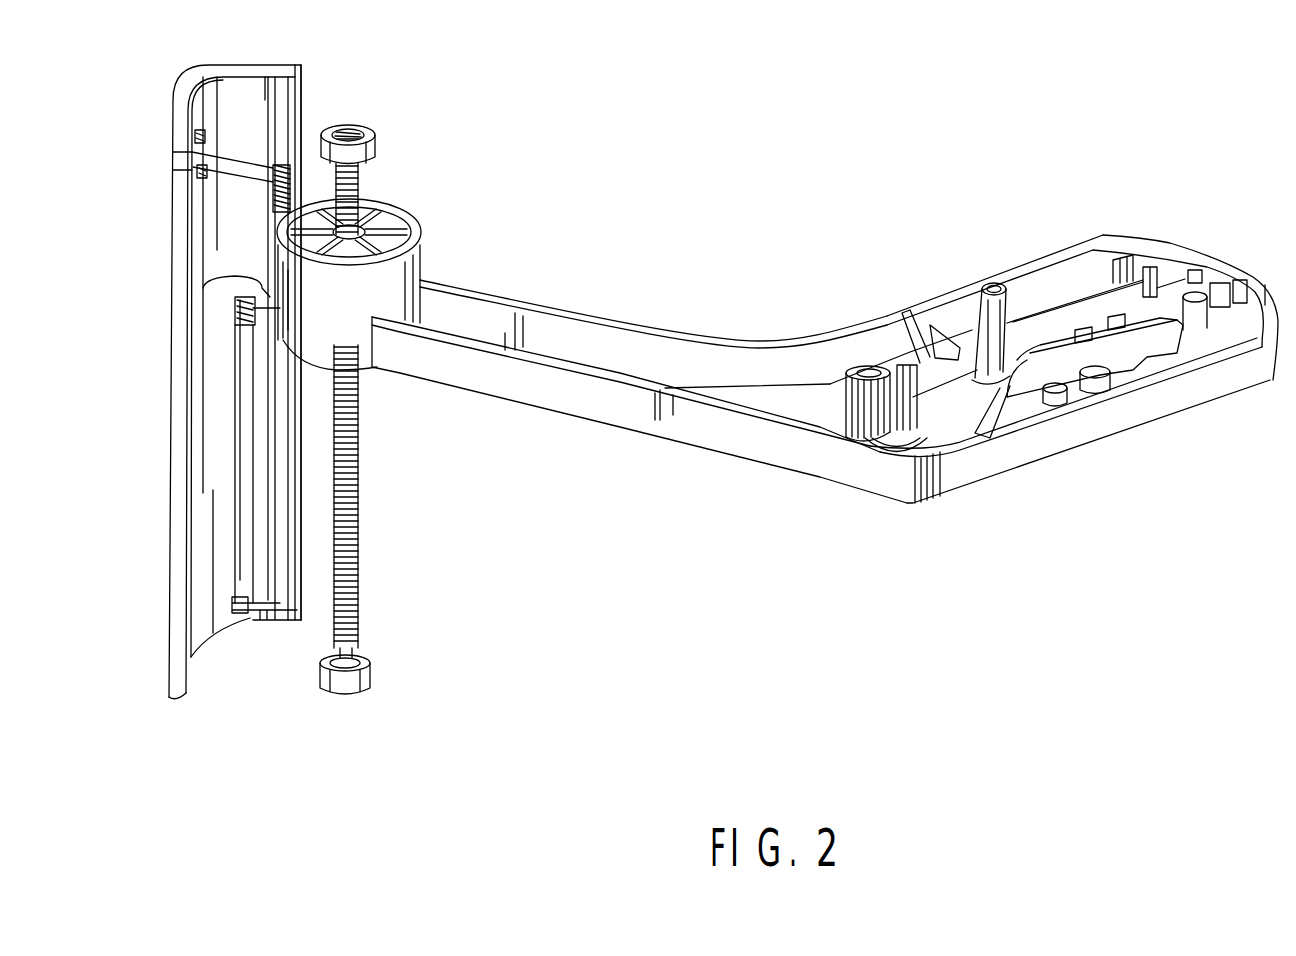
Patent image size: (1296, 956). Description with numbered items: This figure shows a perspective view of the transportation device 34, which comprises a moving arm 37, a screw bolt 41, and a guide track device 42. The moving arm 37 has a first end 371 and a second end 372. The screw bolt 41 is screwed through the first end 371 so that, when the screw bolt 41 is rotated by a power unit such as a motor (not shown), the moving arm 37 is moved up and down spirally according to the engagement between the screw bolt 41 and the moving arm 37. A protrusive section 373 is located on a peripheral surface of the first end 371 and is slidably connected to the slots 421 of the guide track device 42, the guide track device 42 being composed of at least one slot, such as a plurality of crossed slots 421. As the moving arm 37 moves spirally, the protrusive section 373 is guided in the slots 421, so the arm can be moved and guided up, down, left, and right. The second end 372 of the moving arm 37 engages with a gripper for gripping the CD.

The transportation device 34 is at (798, 200).
The moving arm 37 is at (587, 316).
The first end 371 is at (424, 260).
The second end 372 is at (1215, 250).
The protrusive section 373 is at (203, 288).
The screw bolt 41 is at (358, 540).
The guide track device 42 is at (247, 63).
The crossed slots 421 is at (250, 620).